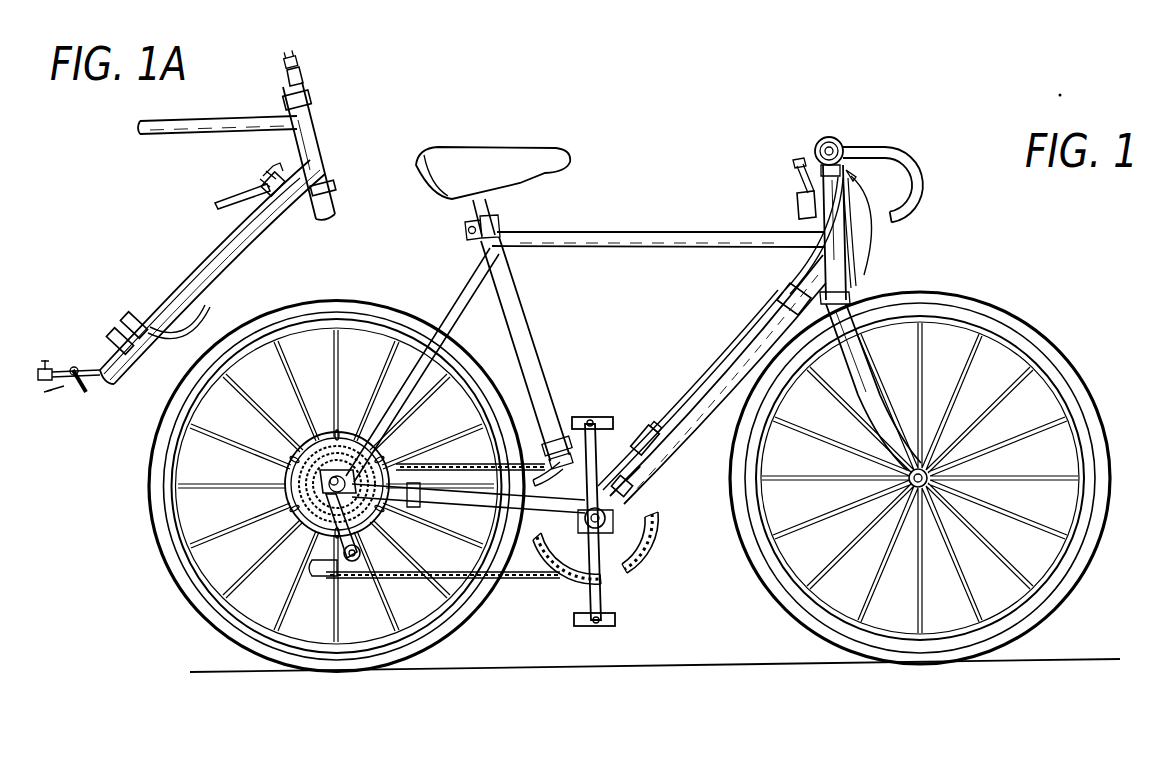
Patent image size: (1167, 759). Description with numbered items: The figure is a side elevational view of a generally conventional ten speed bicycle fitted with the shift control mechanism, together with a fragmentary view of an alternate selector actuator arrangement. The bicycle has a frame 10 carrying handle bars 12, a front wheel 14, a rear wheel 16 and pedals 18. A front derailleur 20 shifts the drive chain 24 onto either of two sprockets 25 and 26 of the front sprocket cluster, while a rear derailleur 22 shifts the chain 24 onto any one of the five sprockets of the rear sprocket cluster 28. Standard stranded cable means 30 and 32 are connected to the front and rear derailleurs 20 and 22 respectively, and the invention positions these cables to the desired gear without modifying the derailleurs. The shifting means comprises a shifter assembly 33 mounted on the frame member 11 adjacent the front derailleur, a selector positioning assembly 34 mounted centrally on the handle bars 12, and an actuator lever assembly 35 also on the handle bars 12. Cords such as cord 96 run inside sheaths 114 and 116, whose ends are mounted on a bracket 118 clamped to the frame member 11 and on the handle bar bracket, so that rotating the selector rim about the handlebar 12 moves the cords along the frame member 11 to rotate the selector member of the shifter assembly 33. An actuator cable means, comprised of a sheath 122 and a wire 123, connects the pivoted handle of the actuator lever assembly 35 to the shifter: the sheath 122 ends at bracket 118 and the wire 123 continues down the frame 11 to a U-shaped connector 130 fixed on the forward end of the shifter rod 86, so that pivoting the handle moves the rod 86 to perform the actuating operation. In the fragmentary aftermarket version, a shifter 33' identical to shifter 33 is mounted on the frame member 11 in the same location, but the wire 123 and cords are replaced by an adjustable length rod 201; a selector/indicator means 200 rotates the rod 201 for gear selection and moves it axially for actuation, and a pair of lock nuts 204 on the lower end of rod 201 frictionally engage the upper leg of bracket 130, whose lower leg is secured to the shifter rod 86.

In FIG. 1, the frame 10 is at (688, 228).
In FIG. 1A, the frame 10 is at (258, 84).
In FIG. 1, the frame member 11 is at (742, 376).
In FIG. 1A, the frame member 11 is at (245, 231).
In FIG. 1, the handle bars 12 is at (893, 150).
In FIG. 1, the front wheel 14 is at (1072, 405).
In FIG. 1, the rear wheel 16 is at (167, 548).
In FIG. 1, the pedals 18 is at (614, 620).
In FIG. 1, the front derailleur 20 is at (562, 482).
In FIG. 1, the rear derailleur 22 is at (312, 557).
In FIG. 1, the drive chain 24 is at (510, 586).
In FIG. 1, the sprocket 25 is at (630, 536).
In FIG. 1, the sprocket 26 is at (566, 560).
In FIG. 1, the rear sprocket cluster 28 is at (292, 477).
In FIG. 1, the cable means 30 is at (613, 464).
In FIG. 1, the cable means 32 is at (460, 470).
In FIG. 1, the shifter assembly 33 is at (654, 485).
In FIG. 1A, the shifter 33' is at (61, 360).
In FIG. 1, the selector positioning assembly 34 is at (848, 136).
In FIG. 1, the actuator lever assembly 35 is at (874, 222).
In FIG. 1A, the shifter rod 86 is at (120, 338).
In FIG. 1, the cord 96 is at (716, 360).
In FIG. 1, the sheath 114 is at (852, 238).
In FIG. 1, the sheath 116 is at (800, 174).
In FIG. 1, the bracket 118 is at (786, 297).
In FIG. 1, the sheath 122 is at (805, 262).
In FIG. 1, the wire 123 is at (737, 340).
In FIG. 1, the connector 130 is at (657, 430).
In FIG. 1A, the connector 130 is at (137, 316).
In FIG. 1A, the selector/indicator means 200 is at (218, 186).
In FIG. 1A, the adjustable length rod 201 is at (212, 243).
In FIG. 1A, the lock nuts 204 is at (201, 310).